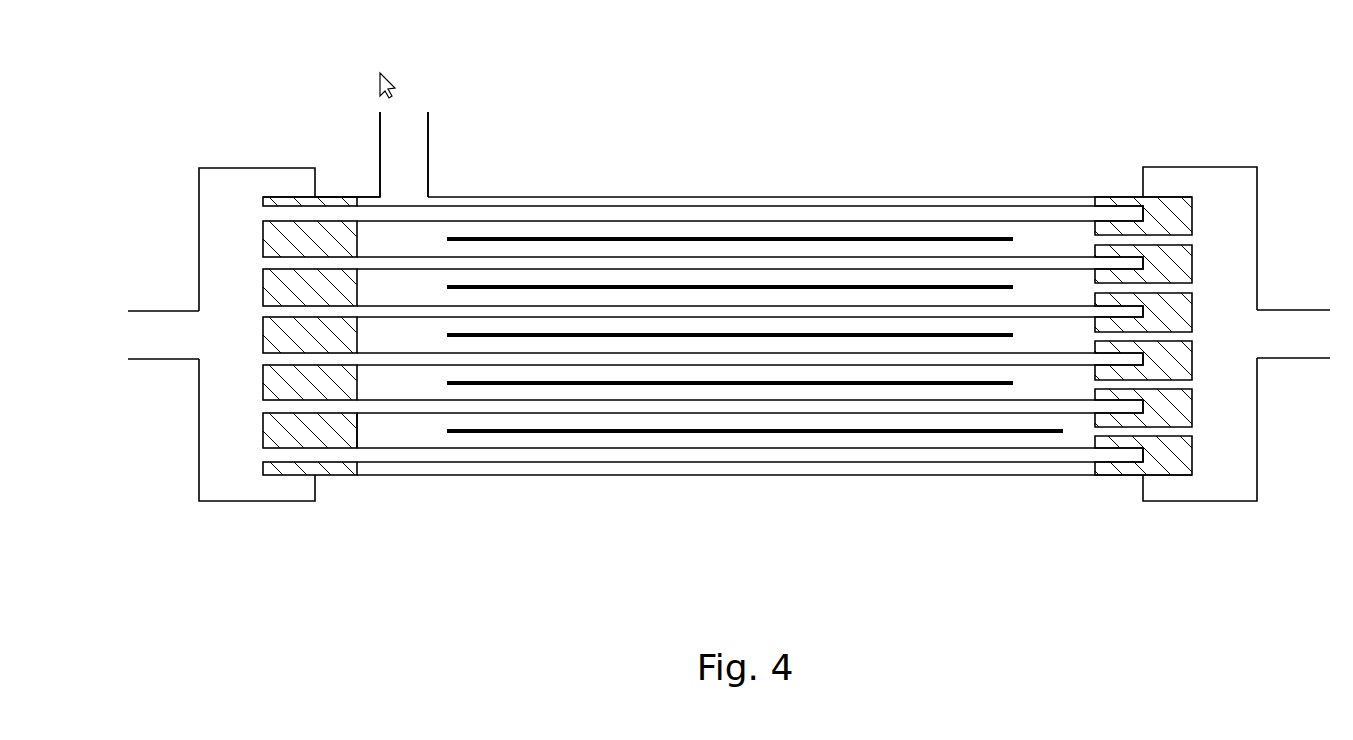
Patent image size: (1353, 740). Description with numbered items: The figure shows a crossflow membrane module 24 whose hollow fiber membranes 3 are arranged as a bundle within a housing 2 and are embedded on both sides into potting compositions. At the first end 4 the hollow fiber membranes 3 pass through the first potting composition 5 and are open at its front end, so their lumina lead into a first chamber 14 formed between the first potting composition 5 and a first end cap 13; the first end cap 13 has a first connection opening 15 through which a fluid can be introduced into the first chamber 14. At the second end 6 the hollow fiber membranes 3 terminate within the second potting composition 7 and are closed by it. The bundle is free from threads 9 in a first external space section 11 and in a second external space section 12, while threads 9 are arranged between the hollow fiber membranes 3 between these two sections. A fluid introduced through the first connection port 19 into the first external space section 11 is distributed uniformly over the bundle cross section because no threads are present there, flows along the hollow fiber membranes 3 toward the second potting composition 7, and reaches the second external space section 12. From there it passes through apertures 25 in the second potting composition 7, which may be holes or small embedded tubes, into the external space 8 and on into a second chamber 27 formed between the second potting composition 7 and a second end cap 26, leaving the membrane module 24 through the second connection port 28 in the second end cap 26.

The housing 2 is at (794, 196).
The hollow fiber membranes 3 is at (978, 362).
The first end 4 is at (283, 458).
The first potting composition 5 is at (349, 425).
The second end 6 is at (1117, 457).
The second potting composition 7 is at (1175, 457).
The external space 8 is at (614, 440).
The threads 9 is at (712, 435).
The first external space section 11 is at (413, 432).
The second external space section 12 is at (1063, 432).
The first end cap 13 is at (197, 455).
The first chamber 14 is at (237, 475).
The first connection opening 15 is at (163, 361).
The first connection port 19 is at (428, 157).
The membrane module 24 is at (727, 78).
The apertures 25 is at (1122, 223).
The second end cap 26 is at (1217, 503).
The second chamber 27 is at (1232, 215).
The second connection port 28 is at (1290, 308).